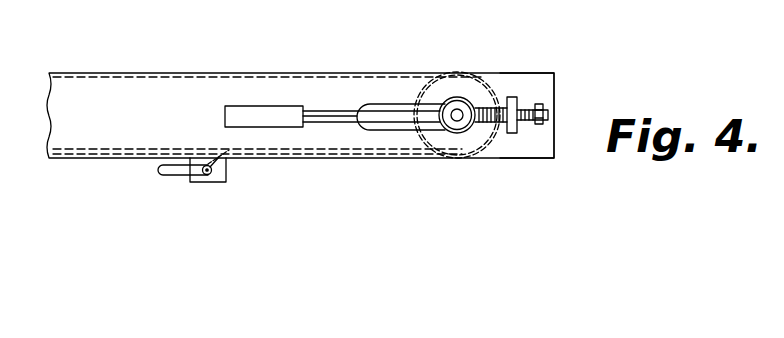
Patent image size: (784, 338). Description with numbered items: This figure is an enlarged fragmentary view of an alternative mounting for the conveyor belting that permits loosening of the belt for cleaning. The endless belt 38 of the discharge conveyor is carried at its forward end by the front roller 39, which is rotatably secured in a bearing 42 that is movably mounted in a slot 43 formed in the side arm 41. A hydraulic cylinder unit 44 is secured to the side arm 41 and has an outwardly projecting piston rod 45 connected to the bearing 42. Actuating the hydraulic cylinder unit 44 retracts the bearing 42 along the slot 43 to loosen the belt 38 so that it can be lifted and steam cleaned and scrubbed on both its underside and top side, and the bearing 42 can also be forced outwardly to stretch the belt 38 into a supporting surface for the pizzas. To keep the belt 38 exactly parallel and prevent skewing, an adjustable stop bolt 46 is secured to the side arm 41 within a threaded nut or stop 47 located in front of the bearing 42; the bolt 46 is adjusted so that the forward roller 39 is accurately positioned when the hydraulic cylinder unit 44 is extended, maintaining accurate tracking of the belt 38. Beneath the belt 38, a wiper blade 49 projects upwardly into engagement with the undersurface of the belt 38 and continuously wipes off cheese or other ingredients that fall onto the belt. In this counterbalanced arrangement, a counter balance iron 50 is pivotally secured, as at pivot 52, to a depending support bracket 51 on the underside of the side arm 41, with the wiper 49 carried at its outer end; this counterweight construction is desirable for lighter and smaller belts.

The endless belt 38 is at (283, 155).
The front roller 39 is at (470, 90).
The side arm 41 is at (525, 74).
The bearing 42 is at (455, 97).
The slot 43 is at (373, 92).
The hydraulic cylinder unit 44 is at (236, 106).
The piston rod 45 is at (341, 120).
The adjustable stop bolt 46 is at (545, 112).
The threaded nut or stop 47 is at (514, 98).
The wiper blade 49 is at (229, 161).
The counter balance iron 50 is at (169, 174).
The depending support bracket 51 is at (227, 181).
The pivot 52 is at (209, 176).